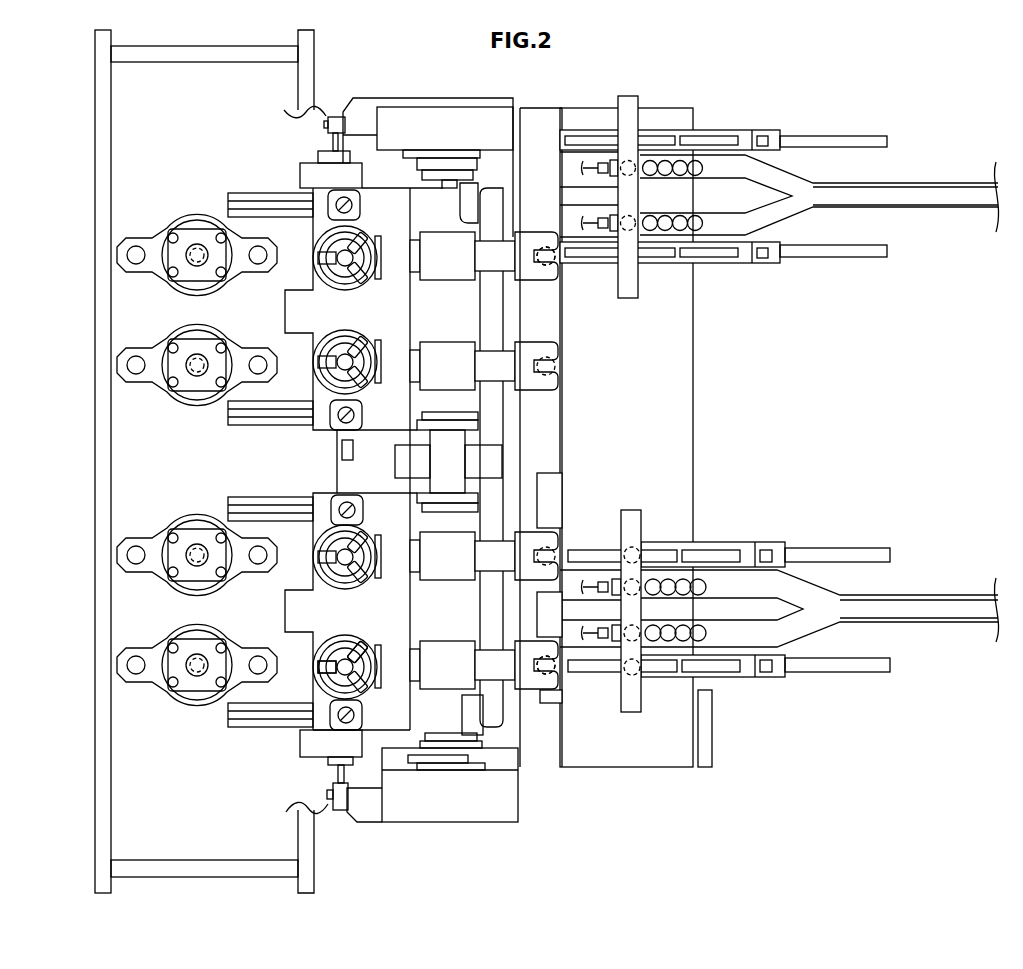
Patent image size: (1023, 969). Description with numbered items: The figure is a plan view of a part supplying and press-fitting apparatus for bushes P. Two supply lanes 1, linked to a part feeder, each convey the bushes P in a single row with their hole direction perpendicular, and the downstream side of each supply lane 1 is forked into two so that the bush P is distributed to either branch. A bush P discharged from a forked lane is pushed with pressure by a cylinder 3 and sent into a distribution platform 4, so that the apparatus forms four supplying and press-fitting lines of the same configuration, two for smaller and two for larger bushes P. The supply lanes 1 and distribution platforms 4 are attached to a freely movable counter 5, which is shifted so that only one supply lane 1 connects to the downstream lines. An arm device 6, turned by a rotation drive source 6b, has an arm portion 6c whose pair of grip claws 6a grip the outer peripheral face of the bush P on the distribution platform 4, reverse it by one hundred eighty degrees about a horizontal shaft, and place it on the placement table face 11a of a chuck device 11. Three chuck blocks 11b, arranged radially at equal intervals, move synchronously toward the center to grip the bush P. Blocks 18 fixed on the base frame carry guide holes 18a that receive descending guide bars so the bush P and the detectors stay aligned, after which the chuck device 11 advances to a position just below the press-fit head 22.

The supply lane 1 is at (942, 208).
The cylinder 3 is at (828, 545).
The distribution platform 4 is at (560, 530).
The counter 5 is at (668, 370).
The arm device 6 is at (431, 593).
The grip claws 6a is at (535, 660).
The rotation drive source 6b is at (473, 793).
The arm portion 6c is at (497, 680).
The chuck device 11 is at (340, 723).
The placement table face 11a is at (340, 642).
The chuck block 11b is at (313, 667).
The block 18 is at (335, 497).
The guide hole 18a is at (337, 510).
The press-fit head 22 is at (192, 566).
The bush P is at (725, 678).